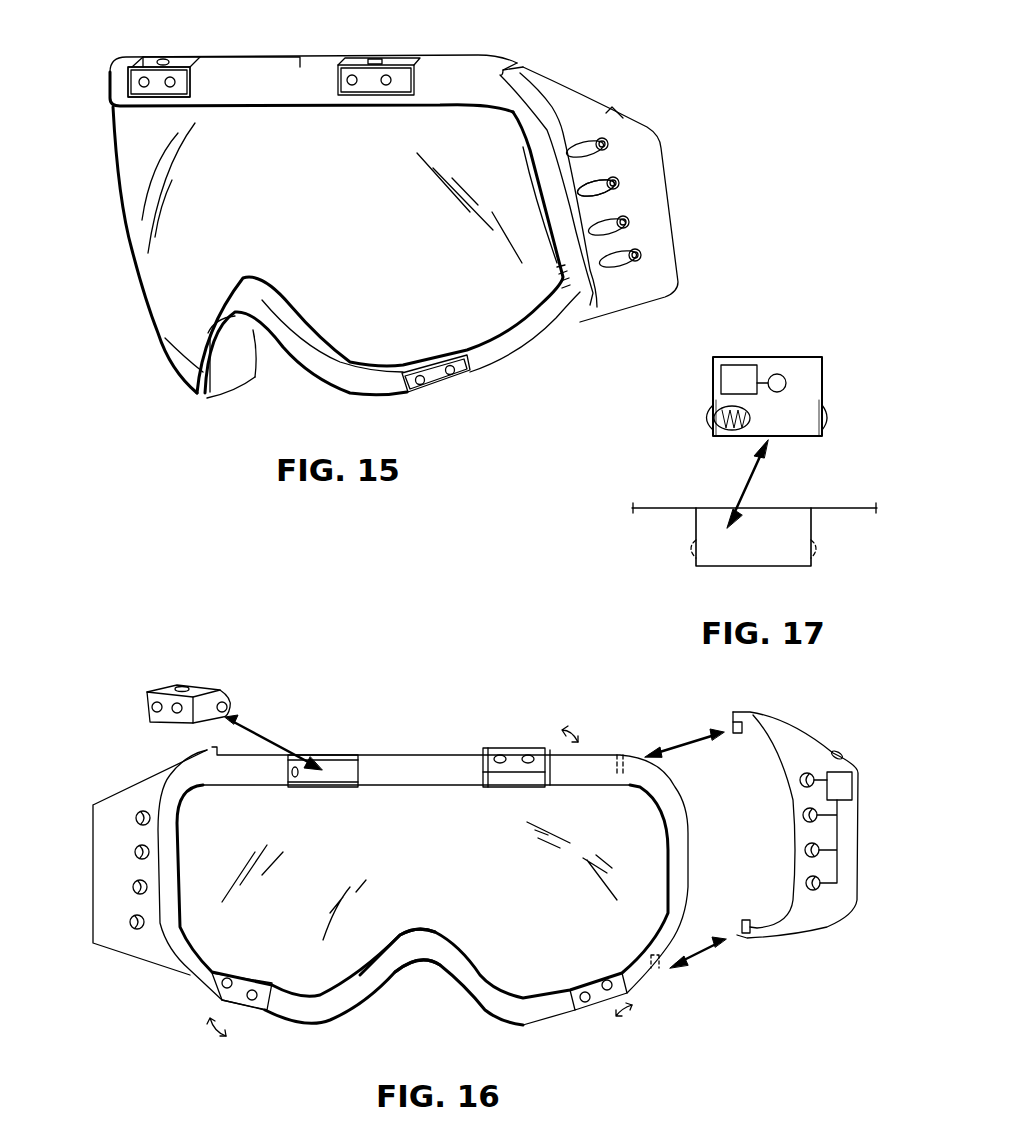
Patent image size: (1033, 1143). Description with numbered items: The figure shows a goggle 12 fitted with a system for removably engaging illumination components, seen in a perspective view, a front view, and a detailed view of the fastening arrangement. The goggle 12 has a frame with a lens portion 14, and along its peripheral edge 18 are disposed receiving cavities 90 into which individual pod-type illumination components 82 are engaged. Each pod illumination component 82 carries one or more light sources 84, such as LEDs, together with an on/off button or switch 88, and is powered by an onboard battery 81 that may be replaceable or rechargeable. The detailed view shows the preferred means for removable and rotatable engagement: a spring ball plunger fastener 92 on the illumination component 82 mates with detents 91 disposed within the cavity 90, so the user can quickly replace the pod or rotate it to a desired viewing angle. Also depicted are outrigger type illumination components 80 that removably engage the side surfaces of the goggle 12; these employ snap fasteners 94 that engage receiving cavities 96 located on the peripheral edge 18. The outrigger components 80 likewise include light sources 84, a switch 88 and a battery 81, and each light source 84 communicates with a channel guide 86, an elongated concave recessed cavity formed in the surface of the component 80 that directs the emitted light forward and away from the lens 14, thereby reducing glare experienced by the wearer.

In FIG. 15, the goggles 12 is at (515, 350).
In FIG. 16, the goggles 12 is at (400, 752).
In FIG. 15, the lens portion 14 is at (348, 236).
In FIG. 16, the lens portion 14 is at (445, 879).
In FIG. 15, the peripheral edge 18 is at (230, 365).
In FIG. 16, the peripheral edge 18 is at (487, 983).
In FIG. 17, the peripheral edge 18 is at (676, 510).
In FIG. 15, the outrigger illumination component 80 is at (668, 248).
In FIG. 16, the outrigger illumination component 80 is at (93, 805).
In FIG. 16, the battery 81 is at (855, 786).
In FIG. 17, the battery 81 is at (733, 375).
In FIG. 15, the illumination component 82 is at (195, 65).
In FIG. 16, the illumination component 82 is at (200, 690).
In FIG. 17, the illumination component 82 is at (824, 378).
In FIG. 15, the light source 84 is at (352, 82).
In FIG. 16, the light source 84 is at (150, 712).
In FIG. 15, the channel guide 86 is at (585, 190).
In FIG. 15, the on/off button or switch 88 is at (160, 58).
In FIG. 16, the on/off button or switch 88 is at (183, 686).
In FIG. 17, the on/off button or switch 88 is at (782, 376).
In FIG. 15, the receiving cavity 90 is at (192, 85).
In FIG. 16, the receiving cavity 90 is at (352, 756).
In FIG. 17, the receiving cavity 90 is at (753, 551).
In FIG. 16, the detent 91 is at (298, 777).
In FIG. 17, the detent 91 is at (686, 549).
In FIG. 16, the spring ball plunger fastener 92 is at (232, 705).
In FIG. 17, the spring ball plunger fastener 92 is at (830, 420).
In FIG. 16, the snap fastener 94 is at (733, 722).
In FIG. 16, the receiving cavity 96 is at (620, 752).